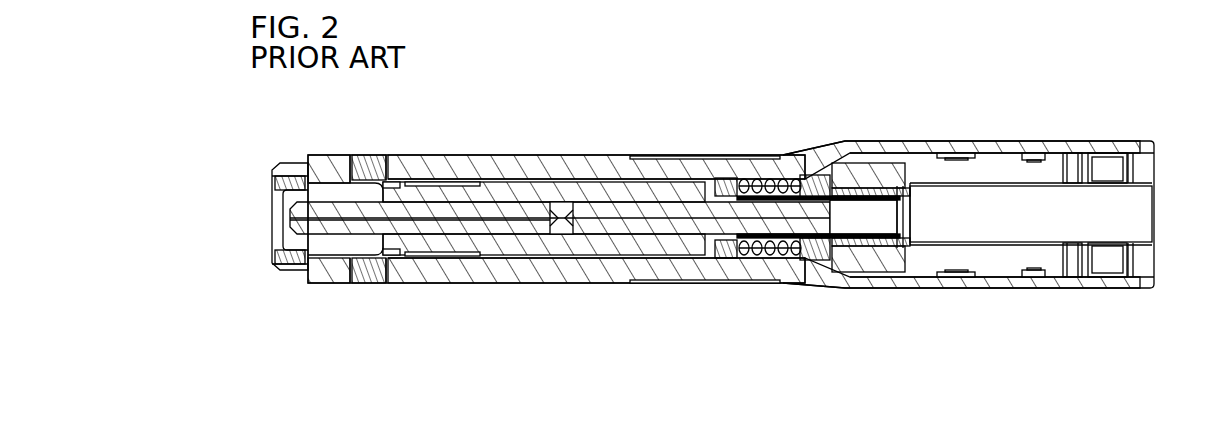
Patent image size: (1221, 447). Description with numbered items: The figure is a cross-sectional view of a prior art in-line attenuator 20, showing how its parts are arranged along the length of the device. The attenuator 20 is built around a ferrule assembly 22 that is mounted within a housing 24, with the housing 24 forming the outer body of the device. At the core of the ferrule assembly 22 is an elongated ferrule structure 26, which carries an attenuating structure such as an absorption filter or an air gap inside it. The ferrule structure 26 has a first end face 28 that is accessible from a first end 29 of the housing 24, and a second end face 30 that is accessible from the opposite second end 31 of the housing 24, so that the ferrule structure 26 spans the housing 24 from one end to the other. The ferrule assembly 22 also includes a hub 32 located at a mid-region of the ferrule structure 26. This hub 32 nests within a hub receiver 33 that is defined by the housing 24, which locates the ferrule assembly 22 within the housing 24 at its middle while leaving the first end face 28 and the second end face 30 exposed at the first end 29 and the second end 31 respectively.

The in-line attenuator 20 is at (656, 300).
The ferrule assembly 22 is at (548, 172).
The housing 24 is at (426, 160).
The ferrule structure 26 is at (384, 208).
The first end face 28 is at (290, 220).
The first end 29 is at (307, 273).
The second end face 30 is at (836, 211).
The second end 31 is at (1156, 141).
The hub 32 is at (591, 170).
The hub receiver 33 is at (464, 180).